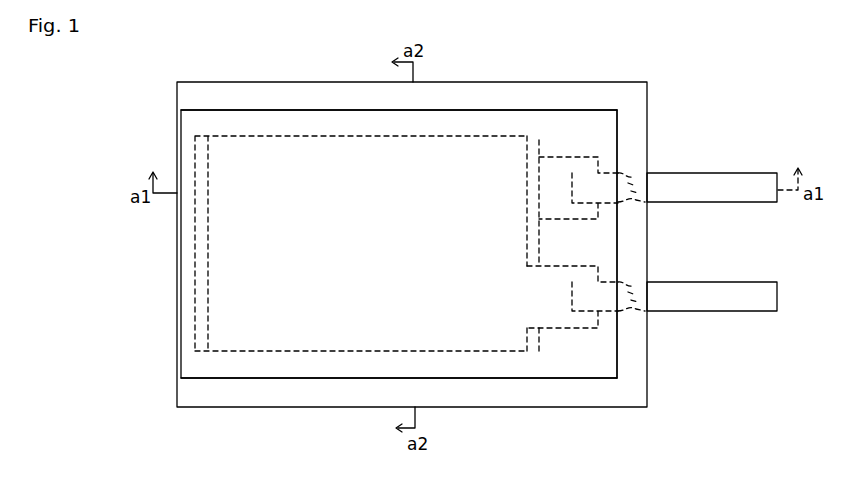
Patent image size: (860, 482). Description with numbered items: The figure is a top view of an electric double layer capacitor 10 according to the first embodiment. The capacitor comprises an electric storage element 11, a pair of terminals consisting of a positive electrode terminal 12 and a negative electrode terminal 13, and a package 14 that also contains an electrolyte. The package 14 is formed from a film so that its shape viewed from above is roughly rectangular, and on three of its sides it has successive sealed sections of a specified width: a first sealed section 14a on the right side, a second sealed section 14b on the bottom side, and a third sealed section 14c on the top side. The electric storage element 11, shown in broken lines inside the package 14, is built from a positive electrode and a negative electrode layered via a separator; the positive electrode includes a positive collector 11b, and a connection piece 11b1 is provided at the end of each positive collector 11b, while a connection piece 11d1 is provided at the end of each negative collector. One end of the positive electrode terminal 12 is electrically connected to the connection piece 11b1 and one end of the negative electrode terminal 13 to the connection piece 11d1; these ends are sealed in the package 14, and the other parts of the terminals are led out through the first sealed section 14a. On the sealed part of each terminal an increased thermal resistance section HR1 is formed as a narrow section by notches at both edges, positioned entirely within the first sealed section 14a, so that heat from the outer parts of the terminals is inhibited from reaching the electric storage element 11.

The electric double layer capacitor 10 is at (211, 82).
The electric storage element 11 is at (406, 249).
The positive collector 11b is at (323, 325).
The connection piece 11d1 is at (557, 172).
The connection piece 11b1 is at (560, 310).
The positive electrode terminal 12 is at (723, 300).
The negative electrode terminal 13 is at (726, 185).
The package 14 is at (463, 122).
The first sealed section 14a is at (640, 240).
The second sealed section 14b is at (507, 395).
The third sealed section 14c is at (503, 92).
The increased thermal resistance section HR1 is at (648, 176).